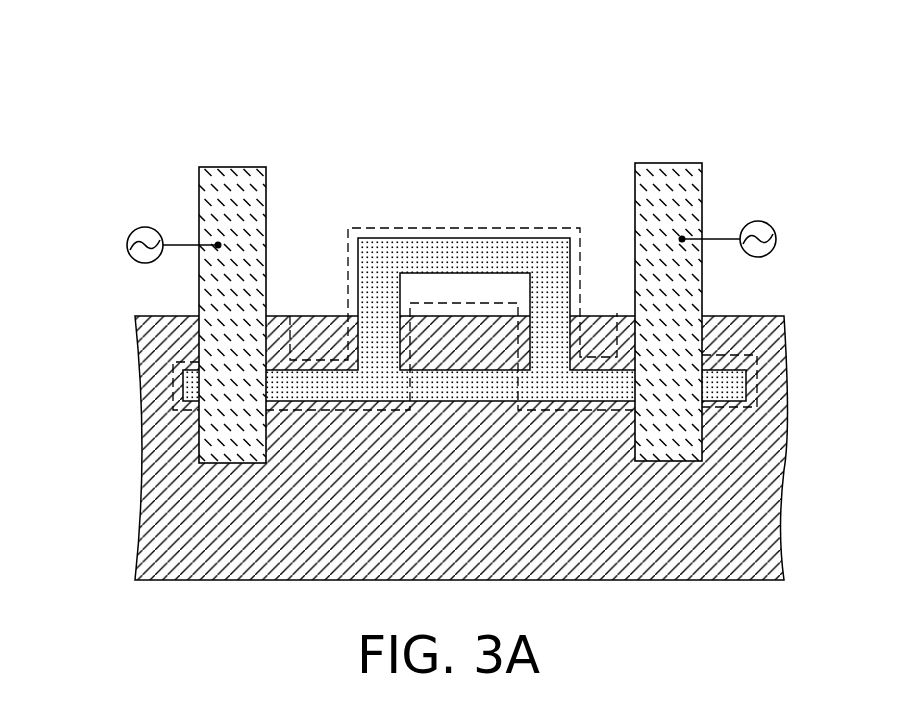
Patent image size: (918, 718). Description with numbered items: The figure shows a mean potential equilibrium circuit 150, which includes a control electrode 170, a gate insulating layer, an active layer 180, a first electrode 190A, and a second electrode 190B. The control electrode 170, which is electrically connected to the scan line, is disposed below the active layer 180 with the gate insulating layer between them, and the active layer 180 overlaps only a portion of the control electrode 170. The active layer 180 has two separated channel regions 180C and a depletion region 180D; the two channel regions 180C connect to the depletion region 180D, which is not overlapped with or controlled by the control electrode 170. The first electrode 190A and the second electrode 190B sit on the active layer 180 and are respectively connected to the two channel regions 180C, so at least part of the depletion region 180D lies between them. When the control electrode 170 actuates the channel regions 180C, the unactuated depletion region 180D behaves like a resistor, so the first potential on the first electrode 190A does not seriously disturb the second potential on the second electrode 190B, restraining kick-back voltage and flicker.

The mean potential equilibrium circuit 150 is at (442, 331).
The control electrode 170 is at (152, 500).
The active layer 180 is at (465, 235).
The channel region 180C is at (292, 316).
The depletion region 180D is at (472, 228).
The first electrode 190A is at (233, 170).
The second electrode 190B is at (672, 166).